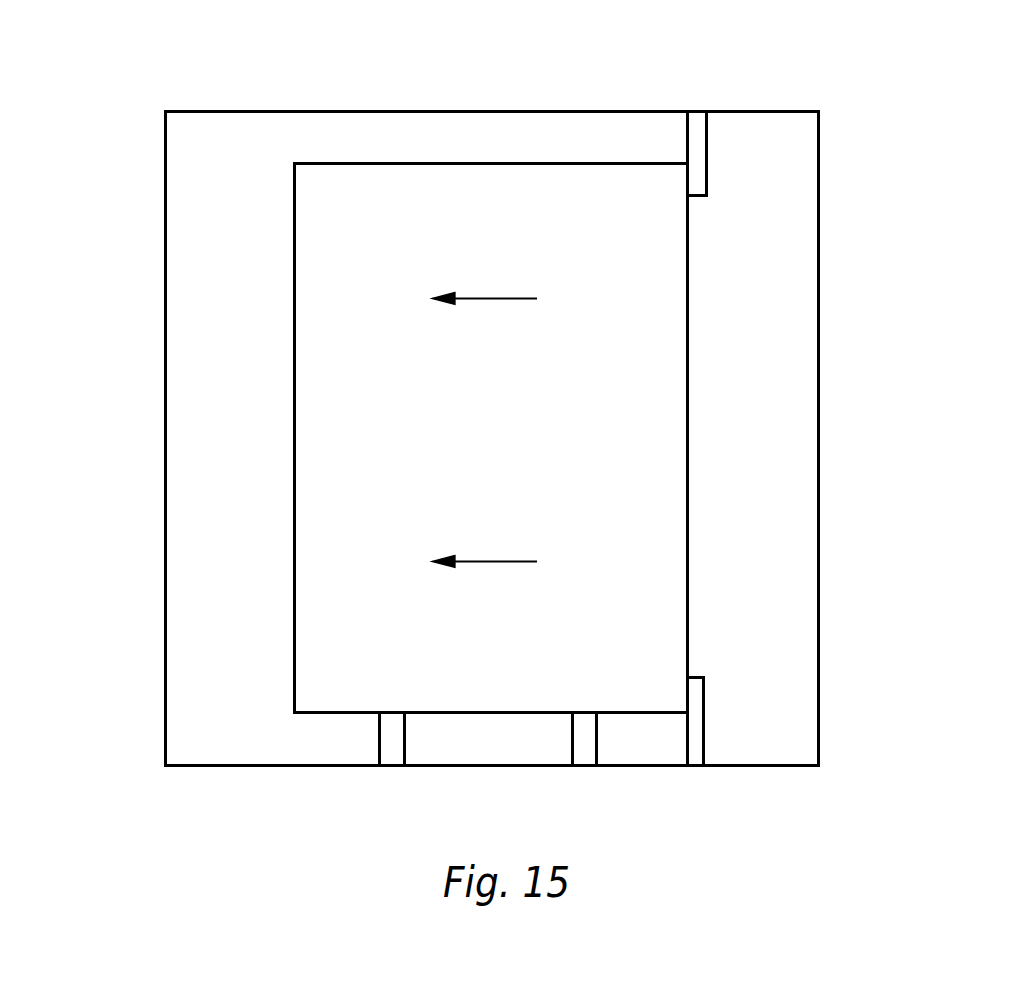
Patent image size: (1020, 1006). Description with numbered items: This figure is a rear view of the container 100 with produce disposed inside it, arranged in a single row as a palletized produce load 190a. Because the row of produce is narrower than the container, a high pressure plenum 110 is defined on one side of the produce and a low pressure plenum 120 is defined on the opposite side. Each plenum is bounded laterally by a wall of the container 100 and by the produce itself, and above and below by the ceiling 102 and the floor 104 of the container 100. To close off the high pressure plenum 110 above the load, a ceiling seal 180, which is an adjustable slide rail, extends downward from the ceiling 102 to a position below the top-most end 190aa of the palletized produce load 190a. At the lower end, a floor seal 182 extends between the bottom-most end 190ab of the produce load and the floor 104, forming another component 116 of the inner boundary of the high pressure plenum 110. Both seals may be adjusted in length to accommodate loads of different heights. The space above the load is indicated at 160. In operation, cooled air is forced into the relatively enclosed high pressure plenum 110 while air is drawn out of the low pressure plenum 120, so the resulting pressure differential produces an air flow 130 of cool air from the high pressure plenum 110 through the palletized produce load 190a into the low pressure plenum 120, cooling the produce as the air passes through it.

The container 100 is at (147, 277).
The ceiling 102 is at (215, 112).
The floor 104 is at (232, 764).
The high pressure plenum 110 is at (802, 403).
The component of the inner boundary of the HP plenum 116 is at (672, 738).
The low pressure plenum 120 is at (203, 400).
The air flow 130 is at (490, 297).
The upper chamber 160 is at (495, 145).
The ceiling seal 180 is at (706, 152).
The floor seal 182 is at (703, 722).
The palletized produce load 190a is at (512, 448).
The top-most end of palletized produce load 190aa is at (600, 162).
The bottom-most end of produce load 190ab is at (491, 673).